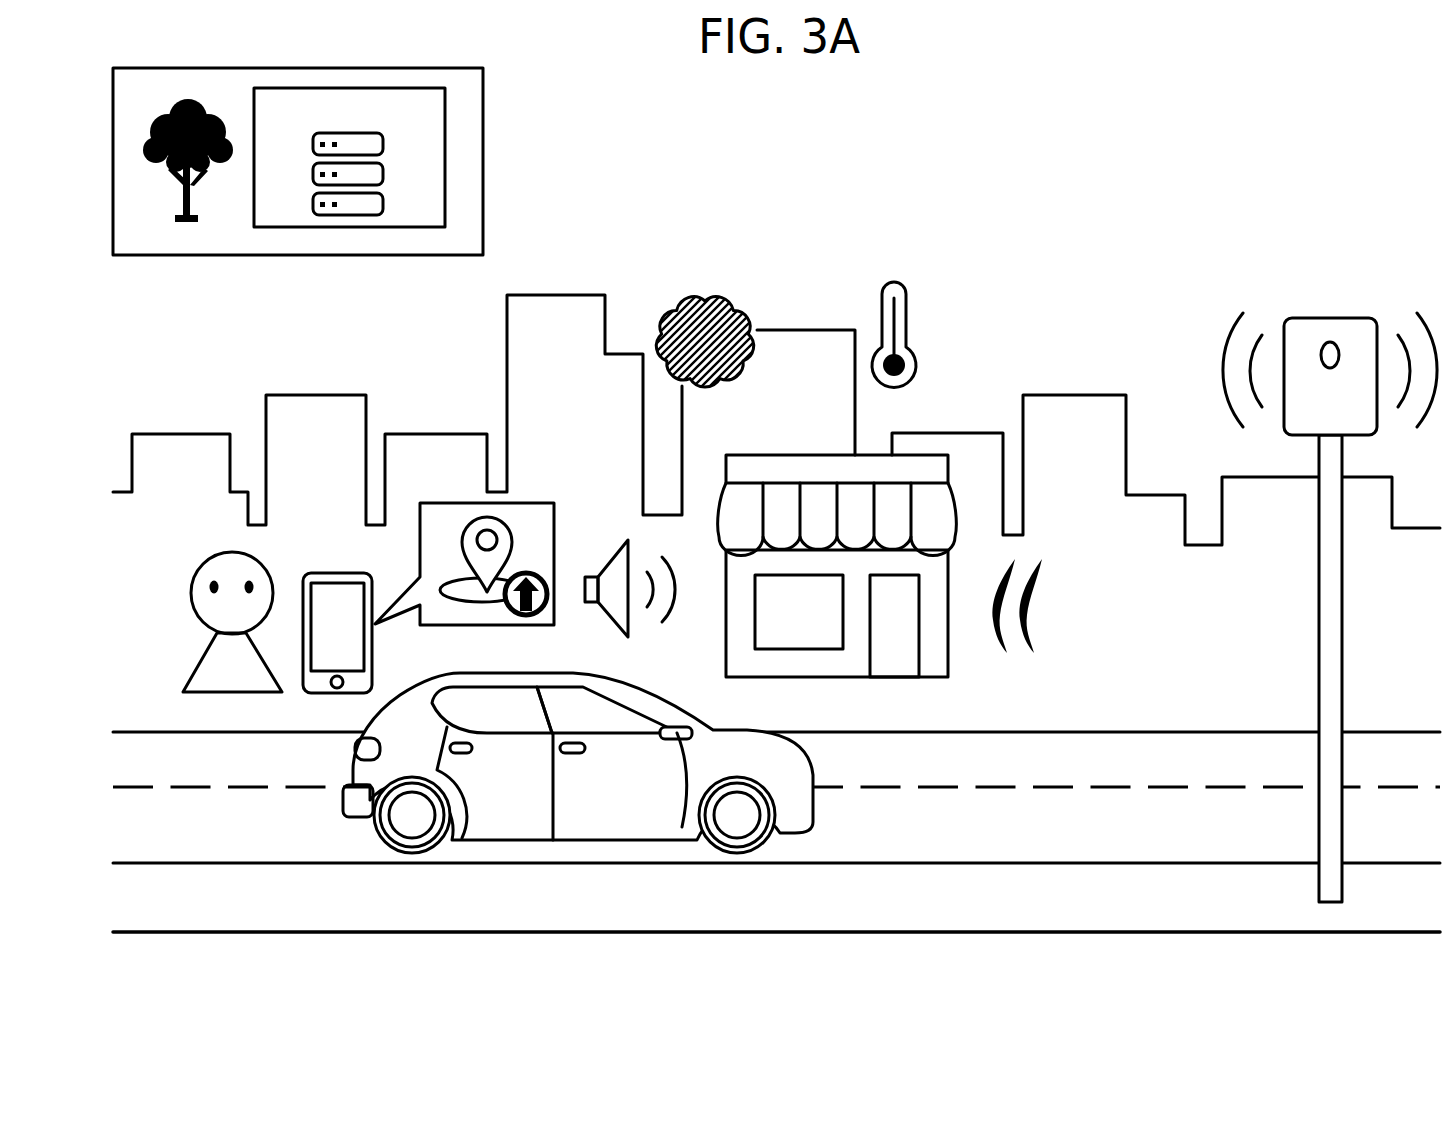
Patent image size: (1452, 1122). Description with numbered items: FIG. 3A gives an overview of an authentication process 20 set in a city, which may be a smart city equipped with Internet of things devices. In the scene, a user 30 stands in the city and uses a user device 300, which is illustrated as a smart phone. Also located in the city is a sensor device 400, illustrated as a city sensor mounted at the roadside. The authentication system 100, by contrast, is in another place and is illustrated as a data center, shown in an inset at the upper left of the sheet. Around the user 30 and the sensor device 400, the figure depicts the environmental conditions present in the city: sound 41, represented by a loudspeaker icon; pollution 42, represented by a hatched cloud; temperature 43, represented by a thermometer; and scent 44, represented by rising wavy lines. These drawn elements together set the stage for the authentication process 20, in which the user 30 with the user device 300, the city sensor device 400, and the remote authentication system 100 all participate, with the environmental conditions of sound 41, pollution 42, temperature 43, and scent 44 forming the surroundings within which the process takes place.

The authentication process 20 is at (784, 155).
The user 30 is at (200, 647).
The sound 41 is at (619, 523).
The pollution 42 is at (702, 276).
The temperature 43 is at (887, 257).
The scent 44 is at (1077, 604).
The authentication system 100 is at (346, 133).
The user device 300 is at (325, 572).
The sensor device 400 is at (1327, 317).